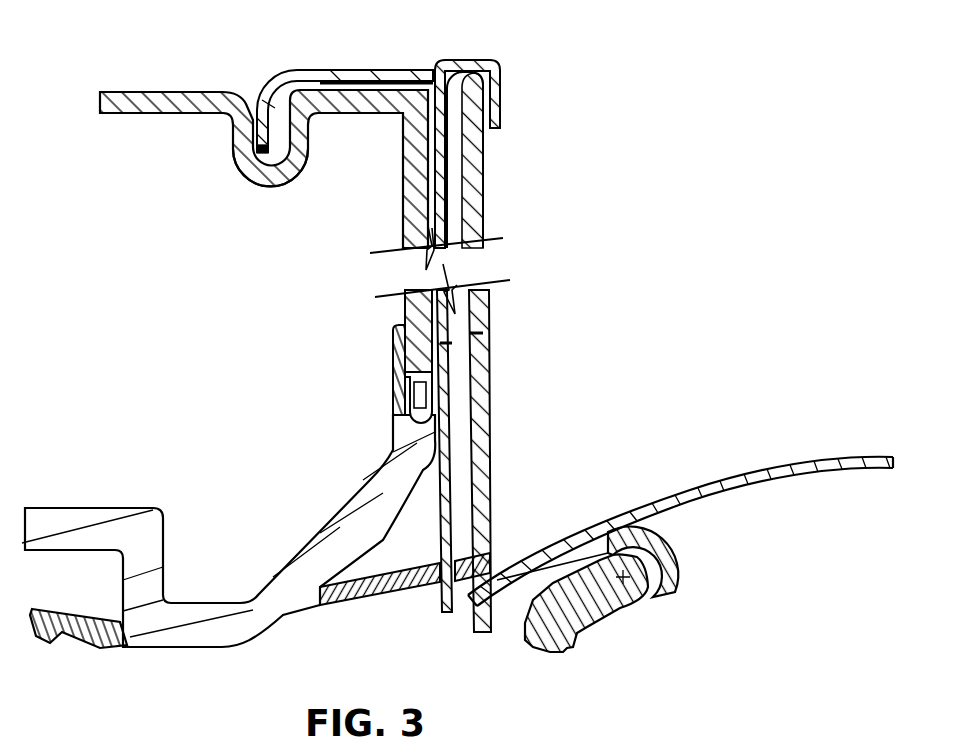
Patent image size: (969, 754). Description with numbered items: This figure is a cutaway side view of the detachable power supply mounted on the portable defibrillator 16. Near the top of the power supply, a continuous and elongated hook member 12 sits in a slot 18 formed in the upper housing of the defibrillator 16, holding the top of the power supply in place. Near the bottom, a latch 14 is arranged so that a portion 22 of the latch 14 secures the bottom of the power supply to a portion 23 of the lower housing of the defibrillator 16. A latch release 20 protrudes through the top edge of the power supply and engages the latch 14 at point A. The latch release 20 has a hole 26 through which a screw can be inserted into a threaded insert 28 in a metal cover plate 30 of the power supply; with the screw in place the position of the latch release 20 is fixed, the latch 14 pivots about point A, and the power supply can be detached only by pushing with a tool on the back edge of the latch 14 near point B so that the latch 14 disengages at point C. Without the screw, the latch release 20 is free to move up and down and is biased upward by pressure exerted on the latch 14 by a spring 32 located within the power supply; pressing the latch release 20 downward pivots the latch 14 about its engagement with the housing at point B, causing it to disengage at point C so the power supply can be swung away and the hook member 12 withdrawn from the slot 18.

The hook member 12 is at (266, 90).
The latch 14 is at (370, 606).
The portable defibrillator 16 is at (160, 92).
The slot 18 is at (250, 167).
The latch release 20 is at (472, 61).
The portion of latch 22 is at (97, 642).
The portion of lower housing 23 is at (221, 630).
The hole 26 is at (470, 333).
The threaded insert 28 is at (460, 343).
The metal cover plate 30 is at (481, 478).
The spring 32 is at (704, 484).
The point A is at (440, 595).
The point B is at (622, 580).
The point C is at (127, 648).